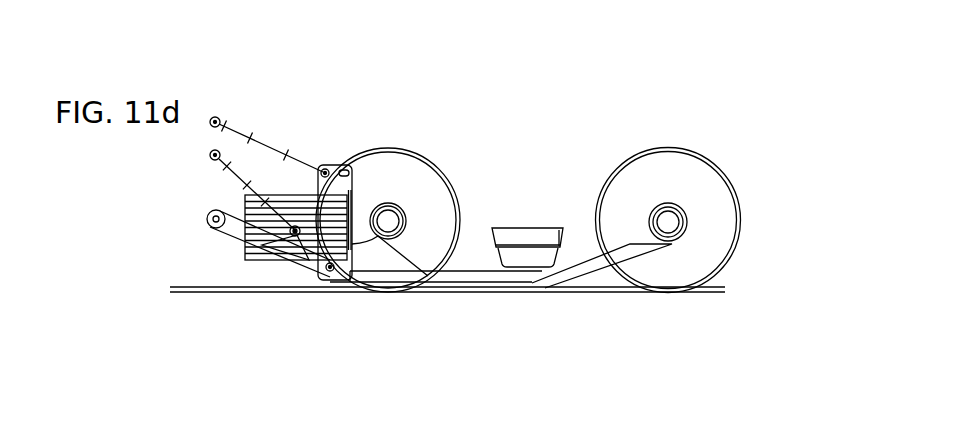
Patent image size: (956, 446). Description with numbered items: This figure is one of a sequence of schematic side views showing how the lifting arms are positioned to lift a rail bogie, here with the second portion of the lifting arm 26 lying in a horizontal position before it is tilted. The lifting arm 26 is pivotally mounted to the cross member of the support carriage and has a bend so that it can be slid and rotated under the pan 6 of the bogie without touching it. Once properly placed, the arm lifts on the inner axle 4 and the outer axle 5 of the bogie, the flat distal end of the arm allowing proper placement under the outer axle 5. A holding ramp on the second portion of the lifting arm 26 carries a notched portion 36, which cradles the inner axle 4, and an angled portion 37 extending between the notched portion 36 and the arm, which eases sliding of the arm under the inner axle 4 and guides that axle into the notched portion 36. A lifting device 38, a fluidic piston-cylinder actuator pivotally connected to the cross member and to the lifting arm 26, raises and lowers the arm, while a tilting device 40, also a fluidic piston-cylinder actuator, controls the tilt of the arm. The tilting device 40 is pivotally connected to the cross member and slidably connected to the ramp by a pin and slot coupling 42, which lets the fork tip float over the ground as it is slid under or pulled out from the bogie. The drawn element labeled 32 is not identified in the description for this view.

The inner axle 4 is at (389, 204).
The outer axle 5 is at (677, 204).
The pan 6 is at (513, 232).
The lifting arm 26 is at (447, 344).
The rear arm 32 is at (650, 303).
The notched portion 36 is at (280, 279).
The angled portion 37 is at (390, 310).
The lifting device 38 is at (223, 175).
The tilting device 40 is at (259, 133).
The pin and slot coupling 42 is at (333, 167).